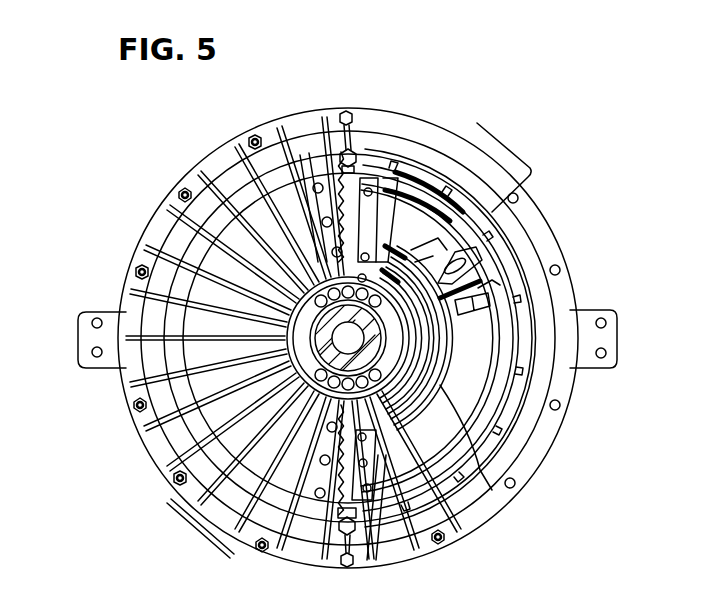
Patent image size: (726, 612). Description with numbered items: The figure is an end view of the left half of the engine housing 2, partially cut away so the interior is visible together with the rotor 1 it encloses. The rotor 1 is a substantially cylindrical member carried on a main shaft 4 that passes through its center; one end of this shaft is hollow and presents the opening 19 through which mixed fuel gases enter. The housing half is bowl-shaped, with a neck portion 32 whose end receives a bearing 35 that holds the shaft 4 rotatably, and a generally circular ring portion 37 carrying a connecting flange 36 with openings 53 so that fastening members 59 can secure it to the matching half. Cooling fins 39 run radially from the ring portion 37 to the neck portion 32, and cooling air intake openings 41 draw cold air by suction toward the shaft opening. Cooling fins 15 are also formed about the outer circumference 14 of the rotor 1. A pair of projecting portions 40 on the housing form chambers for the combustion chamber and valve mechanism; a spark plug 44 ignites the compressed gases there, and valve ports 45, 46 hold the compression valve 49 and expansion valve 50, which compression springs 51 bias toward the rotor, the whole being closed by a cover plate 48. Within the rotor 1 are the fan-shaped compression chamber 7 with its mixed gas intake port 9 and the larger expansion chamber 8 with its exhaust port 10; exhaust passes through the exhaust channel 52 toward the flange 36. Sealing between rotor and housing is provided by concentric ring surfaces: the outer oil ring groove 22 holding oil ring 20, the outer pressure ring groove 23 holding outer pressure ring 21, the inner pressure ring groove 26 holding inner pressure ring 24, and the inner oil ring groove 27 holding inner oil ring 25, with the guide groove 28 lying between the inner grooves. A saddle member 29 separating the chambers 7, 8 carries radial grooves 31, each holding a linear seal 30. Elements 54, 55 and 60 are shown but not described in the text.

The rotor 1 is at (493, 222).
The housing members 2 is at (206, 152).
The main shaft 4 is at (292, 300).
The compression chamber 7 is at (428, 233).
The expansion chamber 8 is at (481, 388).
The mixed gas intake port 9 is at (460, 260).
The exhaust port 10 is at (472, 309).
The outer circumference of the rotor 14 is at (512, 259).
The cooling fins 15 is at (508, 233).
The opening 19 is at (286, 322).
The oil ring 20 is at (440, 195).
The outer pressure ring 21 is at (458, 217).
The outer oil ring groove 22 is at (523, 363).
The outer pressure ring groove 23 is at (432, 380).
The inner pressure ring 24 is at (392, 251).
The inner oil ring 25 is at (404, 281).
The inner pressure ring groove 26 is at (433, 388).
The inner oil ring groove 27 is at (447, 450).
The guide groove 28 is at (445, 388).
The saddle member 29 is at (484, 290).
The seal 30 is at (482, 284).
The grooves 31 is at (492, 281).
The neck portion 32 is at (277, 347).
The bearing 35 is at (275, 378).
The connecting flange 36 is at (542, 239).
The ring portion 37 is at (172, 268).
The cooling fins 39 is at (180, 265).
The projecting portions 40 is at (343, 183).
The cooling air intake openings 41 is at (273, 401).
The spark plug 44 is at (346, 142).
The valve port 45 is at (373, 182).
The valve port 46 is at (375, 490).
The cover plate 48 is at (298, 165).
The compression valve 49 is at (372, 191).
The expansion valve 50 is at (367, 493).
The compression springs 51 is at (367, 218).
The exhaust channel 52 is at (494, 146).
The openings 53 is at (562, 272).
The mounting ear 54 is at (83, 343).
The hole 55 is at (91, 323).
The fastening members 59 is at (186, 190).
The lever 60 is at (380, 500).